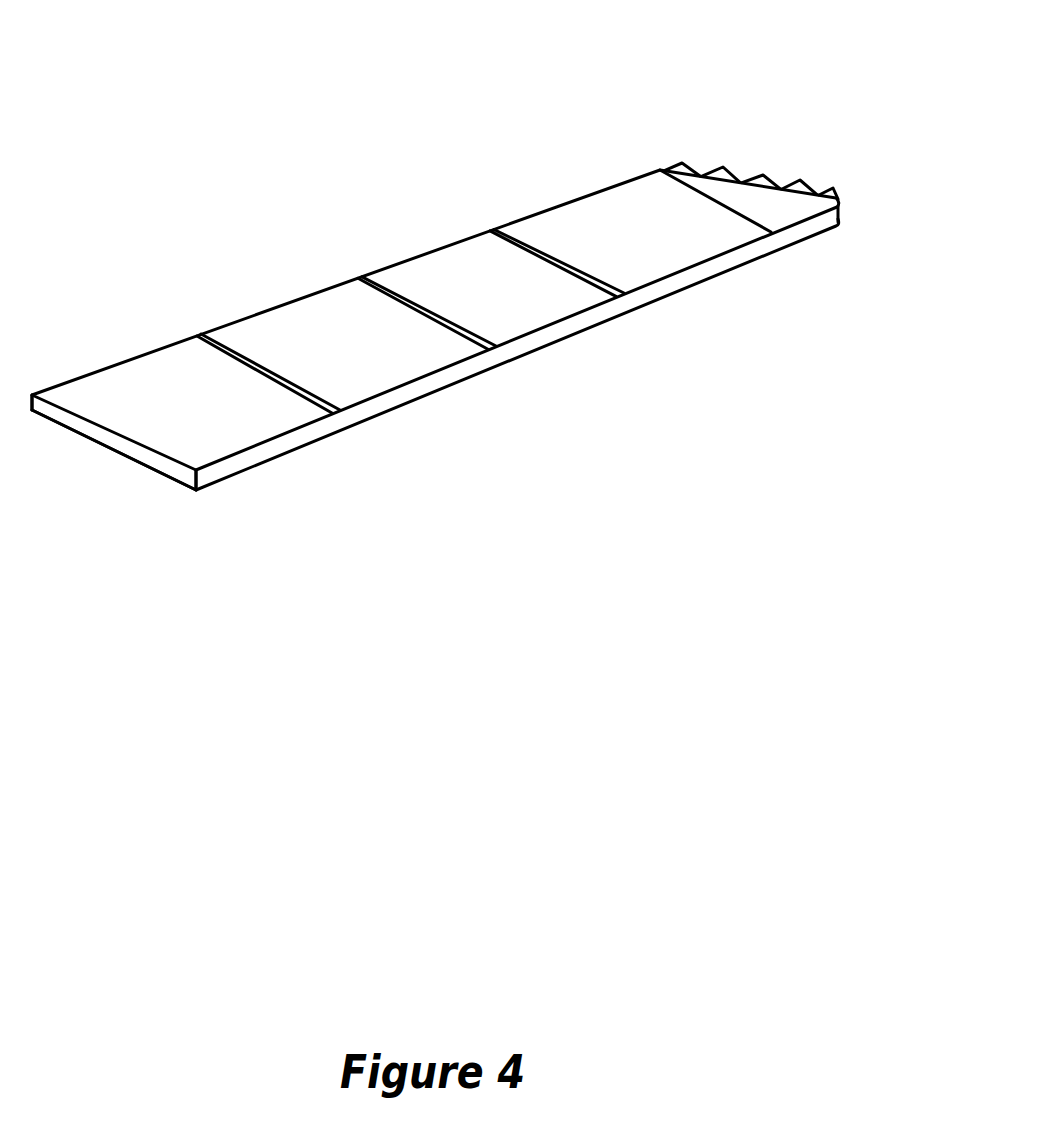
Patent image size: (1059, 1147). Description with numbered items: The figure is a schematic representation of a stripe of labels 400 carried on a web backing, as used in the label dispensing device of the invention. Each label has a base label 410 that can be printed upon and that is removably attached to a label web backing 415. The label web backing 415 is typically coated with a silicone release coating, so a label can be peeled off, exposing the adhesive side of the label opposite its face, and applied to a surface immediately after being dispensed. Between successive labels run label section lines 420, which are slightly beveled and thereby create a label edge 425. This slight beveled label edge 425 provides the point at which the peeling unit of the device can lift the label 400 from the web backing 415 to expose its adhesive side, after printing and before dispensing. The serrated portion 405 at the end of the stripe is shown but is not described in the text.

The labels 400 is at (750, 315).
The end segment with serrated edge 405 is at (612, 237).
The base label 410 is at (392, 370).
The label web backing 415 is at (218, 466).
The label section lines 420 is at (627, 300).
The label edge 425 is at (197, 333).